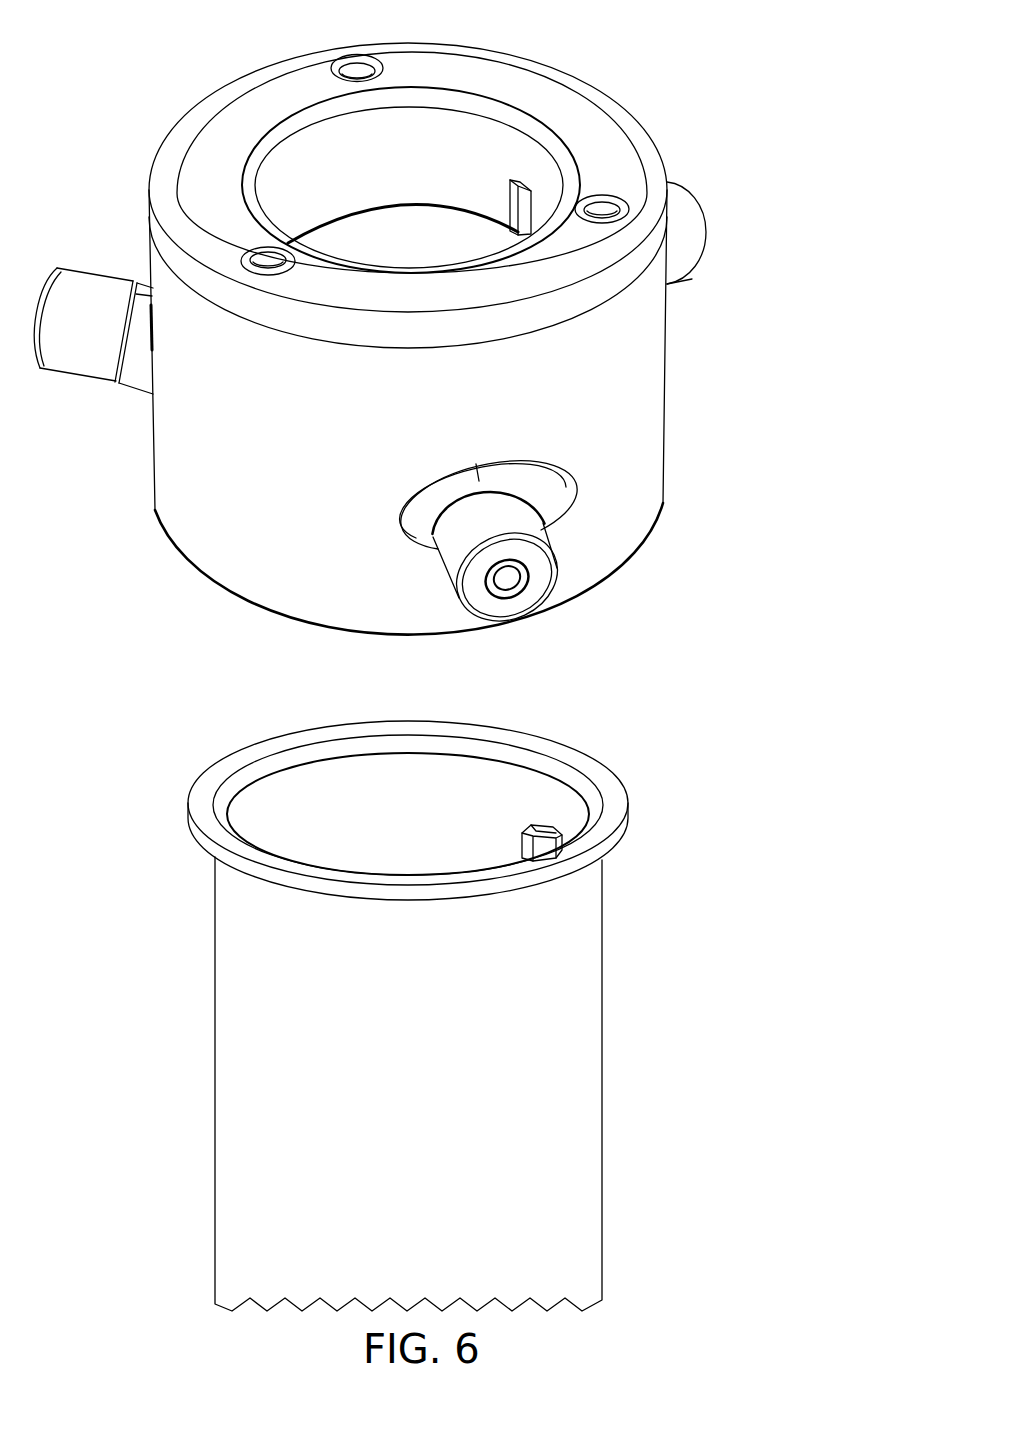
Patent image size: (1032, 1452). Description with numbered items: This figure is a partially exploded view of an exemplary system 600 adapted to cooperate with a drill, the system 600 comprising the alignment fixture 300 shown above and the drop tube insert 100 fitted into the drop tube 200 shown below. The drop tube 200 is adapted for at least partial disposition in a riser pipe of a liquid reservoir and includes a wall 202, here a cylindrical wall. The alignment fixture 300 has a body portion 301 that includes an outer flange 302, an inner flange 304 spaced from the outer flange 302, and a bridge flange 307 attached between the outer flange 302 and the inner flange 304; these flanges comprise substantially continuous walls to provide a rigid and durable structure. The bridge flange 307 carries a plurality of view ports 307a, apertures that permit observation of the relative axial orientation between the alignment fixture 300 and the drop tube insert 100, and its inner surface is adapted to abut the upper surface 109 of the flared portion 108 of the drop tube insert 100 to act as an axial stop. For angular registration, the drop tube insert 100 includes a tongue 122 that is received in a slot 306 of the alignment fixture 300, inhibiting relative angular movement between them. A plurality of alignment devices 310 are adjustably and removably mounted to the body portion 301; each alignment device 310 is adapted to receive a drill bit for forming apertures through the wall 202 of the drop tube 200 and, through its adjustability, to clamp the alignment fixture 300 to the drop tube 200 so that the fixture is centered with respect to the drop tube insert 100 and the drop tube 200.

The system 600 is at (822, 750).
The alignment fixture 300 is at (696, 382).
The body portion 301 is at (666, 308).
The outer flange 302 is at (150, 455).
The inner flange 304 is at (401, 210).
The slot 306 is at (510, 200).
The bridge flange 307 is at (516, 77).
The view ports 307a is at (349, 69).
The alignment device 310 is at (575, 573).
The drop tube insert 100 is at (599, 731).
The flared portion 108 is at (622, 801).
The upper surface 109 is at (612, 823).
The tongue 122 is at (520, 842).
The drop tube 200 is at (182, 1078).
The wall 202 is at (595, 977).